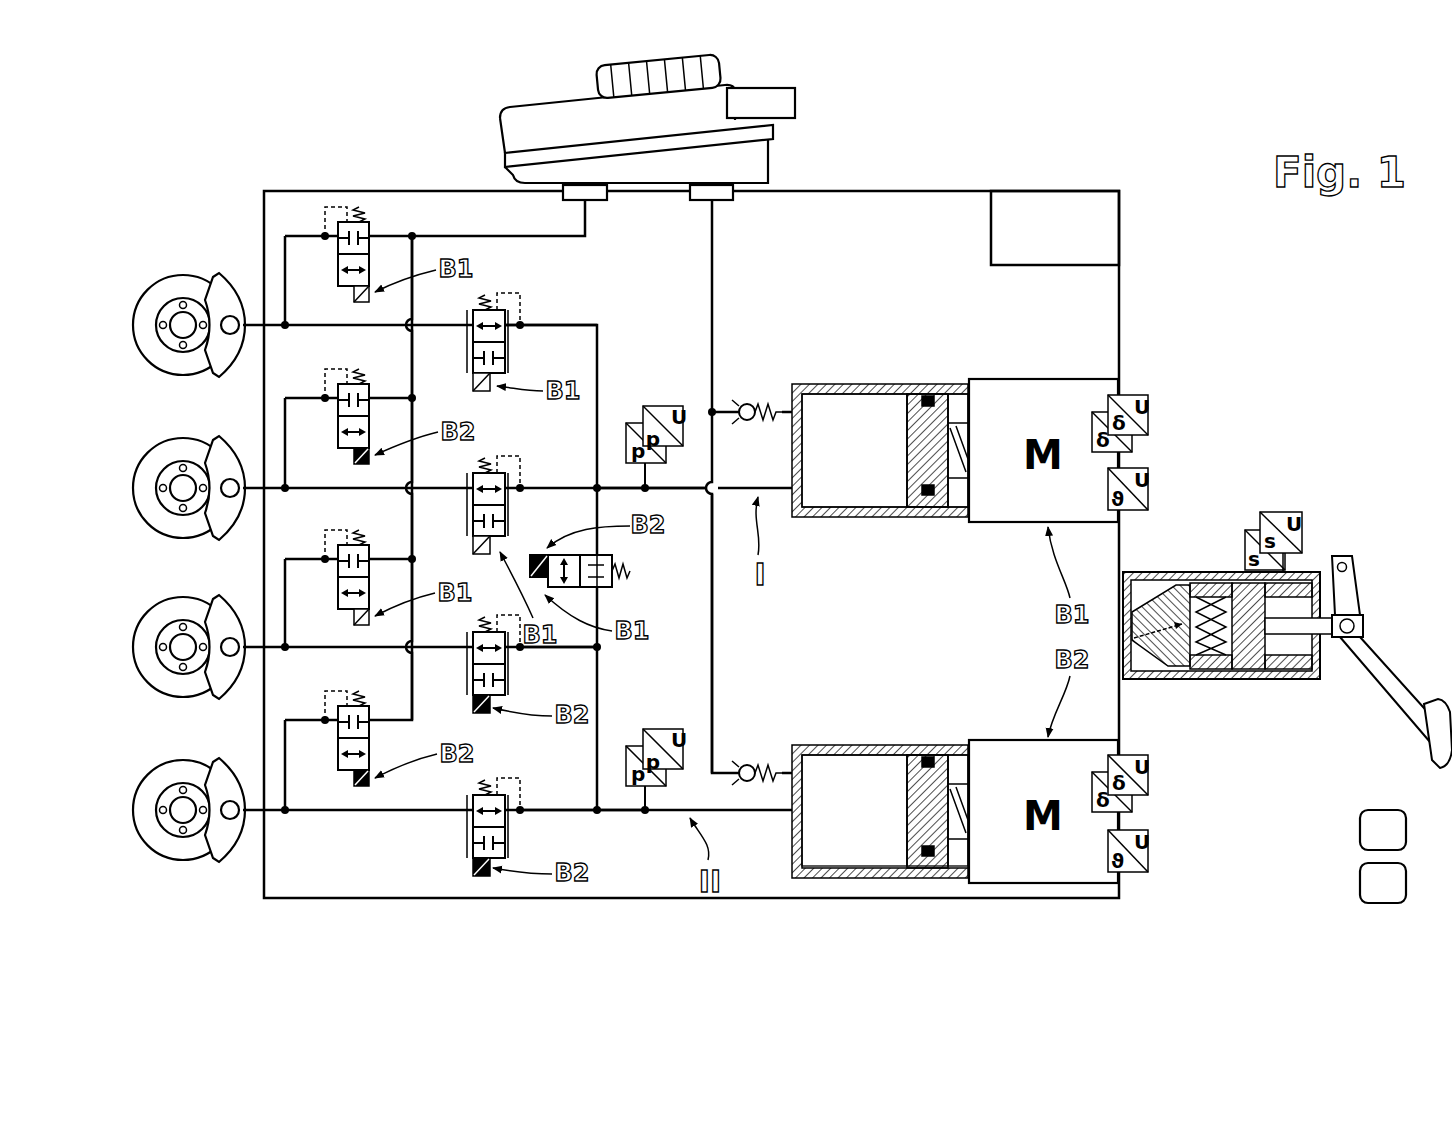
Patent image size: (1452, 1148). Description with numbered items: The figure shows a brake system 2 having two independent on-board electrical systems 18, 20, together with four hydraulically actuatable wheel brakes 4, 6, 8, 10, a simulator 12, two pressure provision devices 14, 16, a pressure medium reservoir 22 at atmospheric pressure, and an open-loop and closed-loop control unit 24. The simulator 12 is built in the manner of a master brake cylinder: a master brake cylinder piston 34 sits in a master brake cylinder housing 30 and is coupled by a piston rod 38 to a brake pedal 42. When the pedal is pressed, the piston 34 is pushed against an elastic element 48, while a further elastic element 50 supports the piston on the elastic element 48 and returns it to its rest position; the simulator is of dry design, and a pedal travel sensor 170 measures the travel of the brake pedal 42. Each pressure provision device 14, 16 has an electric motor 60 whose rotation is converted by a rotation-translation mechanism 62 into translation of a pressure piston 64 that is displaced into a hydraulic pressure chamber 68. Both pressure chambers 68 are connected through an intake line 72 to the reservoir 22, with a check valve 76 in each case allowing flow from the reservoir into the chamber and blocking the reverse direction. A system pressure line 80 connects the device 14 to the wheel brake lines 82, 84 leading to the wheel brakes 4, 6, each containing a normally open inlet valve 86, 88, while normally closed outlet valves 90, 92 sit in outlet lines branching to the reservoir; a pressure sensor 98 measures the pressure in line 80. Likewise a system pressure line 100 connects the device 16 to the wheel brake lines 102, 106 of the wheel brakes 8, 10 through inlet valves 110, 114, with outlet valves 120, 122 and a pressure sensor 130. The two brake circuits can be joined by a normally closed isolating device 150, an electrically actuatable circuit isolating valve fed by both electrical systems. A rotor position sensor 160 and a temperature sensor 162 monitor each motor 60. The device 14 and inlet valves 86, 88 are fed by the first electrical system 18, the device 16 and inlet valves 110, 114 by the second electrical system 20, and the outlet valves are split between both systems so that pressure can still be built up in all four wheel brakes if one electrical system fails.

The brake system 2 is at (1075, 168).
The wheel brake 4 is at (230, 334).
The wheel brake 6 is at (232, 497).
The wheel brake 8 is at (232, 656).
The wheel brake 10 is at (232, 819).
The simulator 12 is at (1243, 638).
The pressure provision device 14 is at (1130, 385).
The pressure provision device 16 is at (1015, 908).
The on-board electrical system 18 is at (1360, 828).
The on-board electrical system 20 is at (1360, 882).
The pressure medium reservoir 22 is at (540, 120).
The open-loop and closed-loop control unit 24 is at (1076, 267).
The master brake cylinder housing 30 is at (1283, 680).
The master brake cylinder piston 34 is at (1228, 580).
The piston rod 38 is at (1305, 628).
The brake pedal 42 is at (1386, 668).
The elastic element 48 is at (1168, 592).
The further elastic element 50 is at (1218, 680).
The electric motor 60 is at (1003, 402).
The rotation-translation mechanism 62 is at (960, 468).
The pressure piston 64 is at (918, 462).
The hydraulic pressure chamber 68 is at (838, 468).
The intake line 72 is at (714, 670).
The check valve 76 is at (742, 404).
The system pressure line 80 is at (680, 491).
The wheel brake line 82 is at (552, 323).
The wheel brake line 84 is at (612, 486).
The inlet valve 86 is at (508, 350).
The inlet valve 88 is at (508, 512).
The outlet valve 90 is at (338, 247).
The outlet valve 92 is at (338, 409).
The pressure sensor 98 is at (662, 405).
The system pressure line 100 is at (622, 813).
The wheel brake line 102 is at (600, 647).
The wheel brake line 106 is at (553, 808).
The inlet valve 110 is at (508, 671).
The inlet valve 114 is at (508, 834).
The outlet valve 120 is at (338, 570).
The outlet valve 122 is at (338, 731).
The pressure sensor 130 is at (684, 745).
The isolating device 150 is at (612, 592).
The rotor position sensor 160 is at (1150, 408).
The temperature sensor 162 is at (1150, 482).
The pedal travel sensor 170 is at (1302, 532).